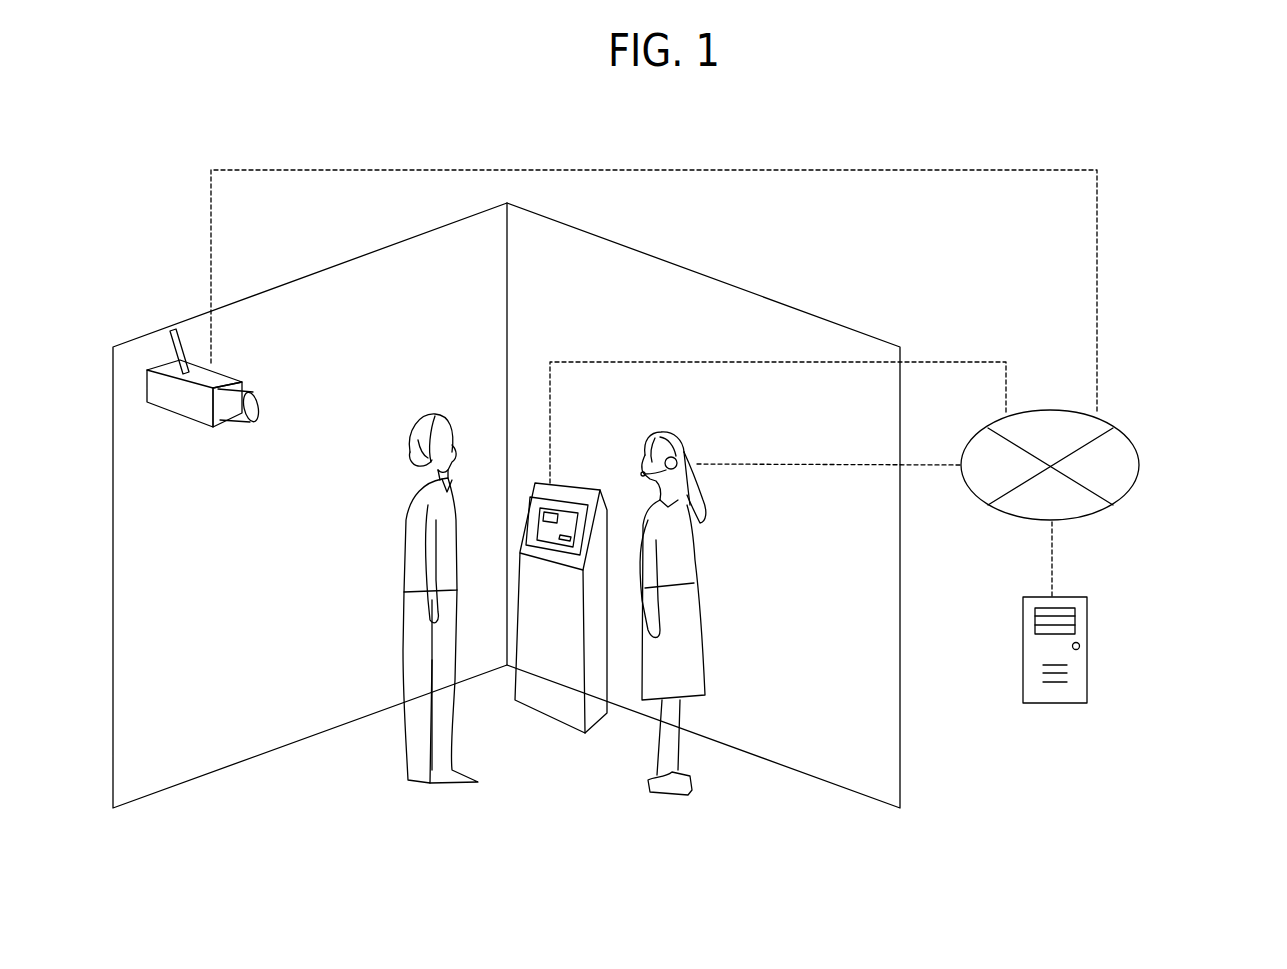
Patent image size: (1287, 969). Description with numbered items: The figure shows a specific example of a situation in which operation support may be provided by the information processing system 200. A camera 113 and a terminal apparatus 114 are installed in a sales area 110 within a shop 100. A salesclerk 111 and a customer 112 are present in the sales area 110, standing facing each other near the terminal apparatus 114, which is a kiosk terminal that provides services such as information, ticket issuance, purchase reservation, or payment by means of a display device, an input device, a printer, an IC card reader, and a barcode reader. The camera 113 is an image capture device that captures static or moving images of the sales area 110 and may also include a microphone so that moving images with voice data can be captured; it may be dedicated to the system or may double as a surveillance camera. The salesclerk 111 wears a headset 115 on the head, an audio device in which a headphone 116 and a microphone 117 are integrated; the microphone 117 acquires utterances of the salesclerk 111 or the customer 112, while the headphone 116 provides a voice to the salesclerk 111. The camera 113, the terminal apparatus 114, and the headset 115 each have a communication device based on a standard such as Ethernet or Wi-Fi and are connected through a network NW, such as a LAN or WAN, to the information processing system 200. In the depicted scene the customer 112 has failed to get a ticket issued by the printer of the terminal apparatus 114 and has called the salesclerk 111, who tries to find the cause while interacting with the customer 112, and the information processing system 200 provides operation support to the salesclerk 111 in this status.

The shop 100 is at (1176, 183).
The sales area 110 is at (800, 281).
The salesclerk 111 is at (700, 567).
The customer 112 is at (408, 564).
The camera 113 is at (153, 363).
The terminal apparatus 114 is at (553, 698).
The headset 115 is at (673, 437).
The headphone 116 is at (677, 468).
The microphone 117 is at (640, 473).
The network NW is at (1120, 432).
The information processing system 200 is at (1087, 652).